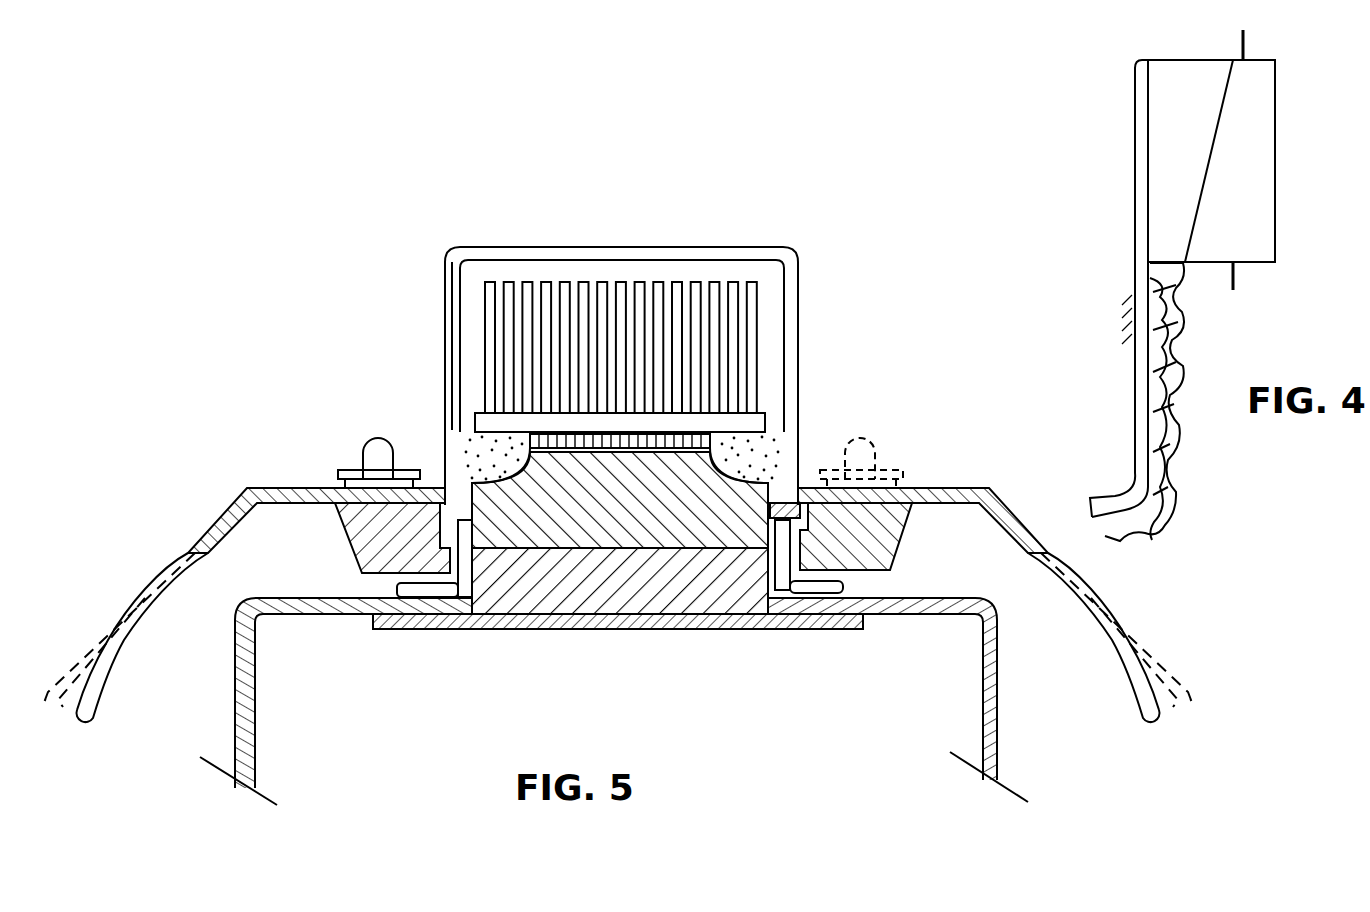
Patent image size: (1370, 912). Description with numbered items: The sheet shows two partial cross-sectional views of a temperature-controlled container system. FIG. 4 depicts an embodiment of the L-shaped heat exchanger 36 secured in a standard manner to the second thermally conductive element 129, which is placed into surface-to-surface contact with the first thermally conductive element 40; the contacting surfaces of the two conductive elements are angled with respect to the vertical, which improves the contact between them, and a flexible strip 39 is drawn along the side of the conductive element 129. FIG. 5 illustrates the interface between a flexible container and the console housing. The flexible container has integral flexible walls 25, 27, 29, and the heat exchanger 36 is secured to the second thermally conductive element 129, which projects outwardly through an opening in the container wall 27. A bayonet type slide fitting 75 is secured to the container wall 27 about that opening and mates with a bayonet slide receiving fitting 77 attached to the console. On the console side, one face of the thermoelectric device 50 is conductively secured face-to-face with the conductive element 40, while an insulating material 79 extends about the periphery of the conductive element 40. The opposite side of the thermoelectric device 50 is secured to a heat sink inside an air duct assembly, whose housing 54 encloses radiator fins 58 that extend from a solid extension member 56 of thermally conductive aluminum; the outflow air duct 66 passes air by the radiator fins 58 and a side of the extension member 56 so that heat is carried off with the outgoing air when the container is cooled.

In FIG. 5, the flexible wall 25 is at (252, 742).
In FIG. 5, the container wall 27 is at (884, 600).
In FIG. 5, the flexible wall 29 is at (1000, 707).
In FIG. 5, the L-shaped heat exchanger 36 is at (425, 627).
In FIG. 4, the flexible strip 39 is at (1138, 125).
In FIG. 5, the first thermally conductive element 40 is at (700, 508).
In FIG. 4, the first thermally conductive element 40 is at (1257, 242).
In FIG. 5, the thermoelectric device 50 is at (775, 438).
In FIG. 5, the housing 54 is at (796, 262).
In FIG. 5, the solid extension member 56 is at (766, 414).
In FIG. 5, the radiator fins 58 is at (752, 337).
In FIG. 5, the outflow air duct 66 is at (478, 302).
In FIG. 5, the bayonet type slide fitting 75 is at (855, 592).
In FIG. 5, the bayonet slide receiving fitting 77 is at (901, 504).
In FIG. 5, the insulating material 79 is at (468, 436).
In FIG. 5, the second thermally conductive element 129 is at (560, 600).
In FIG. 4, the second thermally conductive element 129 is at (1190, 72).